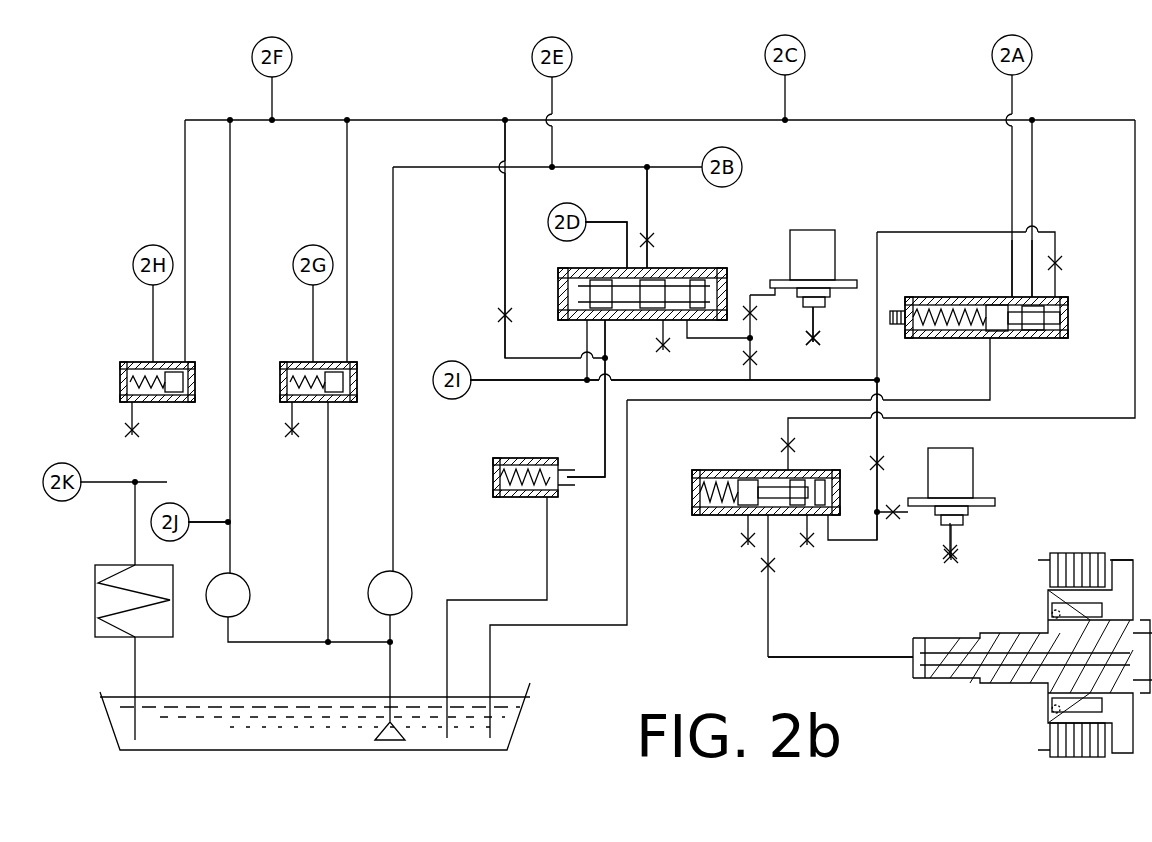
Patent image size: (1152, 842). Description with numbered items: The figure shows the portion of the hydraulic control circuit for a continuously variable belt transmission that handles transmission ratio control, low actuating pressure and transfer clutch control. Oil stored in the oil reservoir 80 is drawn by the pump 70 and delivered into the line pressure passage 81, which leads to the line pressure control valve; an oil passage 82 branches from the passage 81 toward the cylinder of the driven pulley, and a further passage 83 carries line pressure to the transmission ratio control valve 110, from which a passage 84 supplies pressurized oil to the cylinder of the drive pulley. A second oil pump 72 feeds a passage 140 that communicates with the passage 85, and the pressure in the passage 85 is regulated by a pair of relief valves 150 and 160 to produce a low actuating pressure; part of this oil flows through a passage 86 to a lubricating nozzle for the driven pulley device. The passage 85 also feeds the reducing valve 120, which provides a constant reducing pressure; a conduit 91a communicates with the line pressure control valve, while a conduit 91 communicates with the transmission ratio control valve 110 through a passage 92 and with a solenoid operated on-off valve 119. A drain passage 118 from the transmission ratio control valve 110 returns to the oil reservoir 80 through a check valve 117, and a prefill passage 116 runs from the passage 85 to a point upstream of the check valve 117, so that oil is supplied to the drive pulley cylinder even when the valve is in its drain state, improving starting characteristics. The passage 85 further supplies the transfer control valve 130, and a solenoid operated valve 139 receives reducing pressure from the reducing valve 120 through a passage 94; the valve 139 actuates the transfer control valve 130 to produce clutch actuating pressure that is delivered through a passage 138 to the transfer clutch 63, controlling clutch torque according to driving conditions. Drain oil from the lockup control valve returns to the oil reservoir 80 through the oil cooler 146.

The transfer clutch 63 is at (1100, 529).
The pump 70 is at (412, 583).
The oil pump 72 is at (250, 585).
The oil reservoir 80 is at (522, 720).
The line pressure passage 81 is at (565, 166).
The oil passage 82 is at (555, 110).
The passage 83 is at (650, 216).
The passage 84 is at (614, 213).
The passage 85 is at (746, 102).
The passage 86 is at (272, 110).
The conduit 91 is at (967, 214).
The conduit 91a is at (1008, 277).
The passage 92 is at (720, 366).
The passage 94 is at (880, 448).
The transmission ratio control valve 110 is at (722, 262).
The prefill passage 116 is at (500, 278).
The check valve 117 is at (538, 455).
The drain passage 118 is at (600, 418).
The solenoid operated on-off valve 119 is at (812, 240).
The reducing valve 120 is at (1022, 340).
The transfer control valve 130 is at (742, 468).
The passage 138 is at (866, 643).
The solenoid operated valve 139 is at (975, 470).
The passage 140 is at (208, 520).
The oil cooler 146 is at (173, 630).
The relief valve 150 is at (304, 342).
The relief valve 160 is at (140, 360).